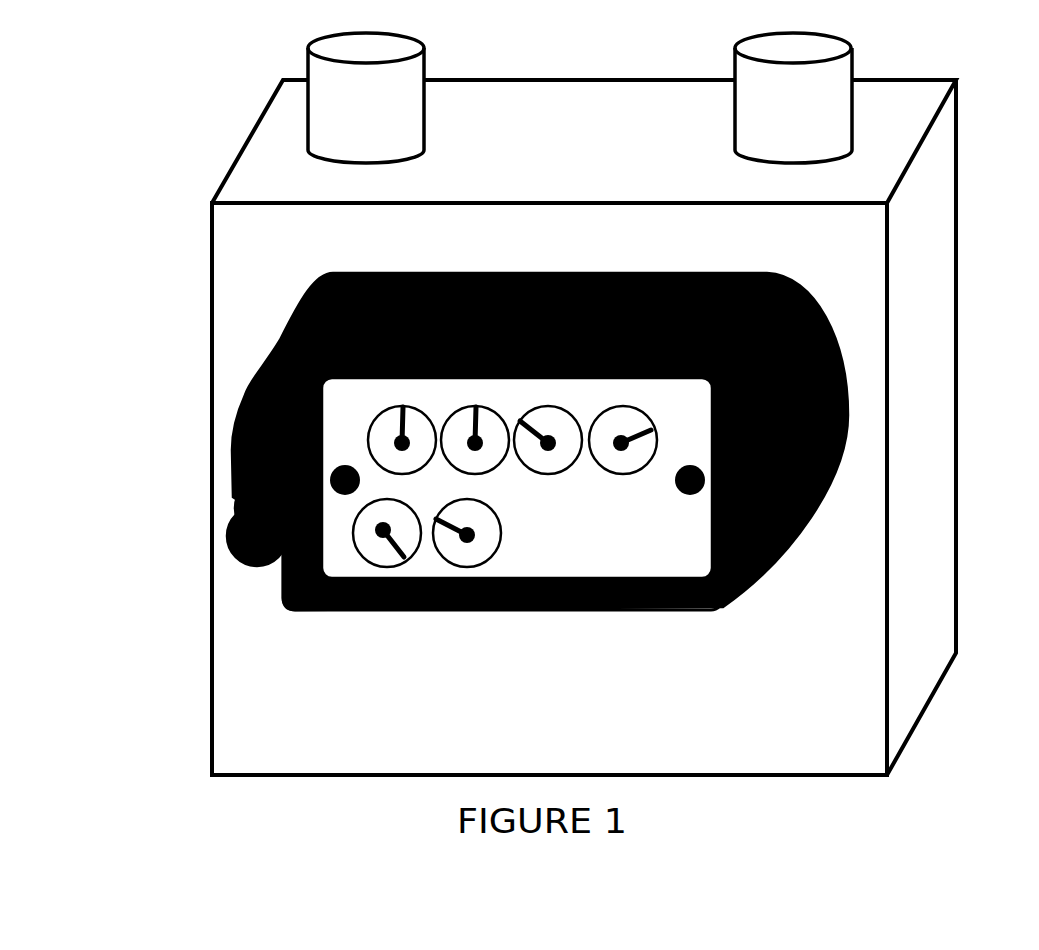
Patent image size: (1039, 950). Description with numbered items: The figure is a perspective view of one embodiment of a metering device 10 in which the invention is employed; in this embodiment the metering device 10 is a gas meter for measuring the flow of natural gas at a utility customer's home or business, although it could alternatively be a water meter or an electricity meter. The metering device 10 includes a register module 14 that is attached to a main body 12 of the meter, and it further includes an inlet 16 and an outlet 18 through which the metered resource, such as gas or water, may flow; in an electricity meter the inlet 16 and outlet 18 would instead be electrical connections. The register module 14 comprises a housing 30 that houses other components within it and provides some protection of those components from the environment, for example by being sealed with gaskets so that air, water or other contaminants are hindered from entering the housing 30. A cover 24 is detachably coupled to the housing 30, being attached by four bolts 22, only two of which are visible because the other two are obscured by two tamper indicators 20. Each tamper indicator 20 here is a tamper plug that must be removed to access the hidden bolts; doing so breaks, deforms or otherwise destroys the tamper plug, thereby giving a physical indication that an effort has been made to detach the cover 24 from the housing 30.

The metering device 10 is at (188, 109).
The main body 12 is at (960, 395).
The register module 14 is at (620, 625).
The inlet 16 is at (427, 68).
The outlet 18 is at (852, 68).
The tamper indicator 20 is at (773, 400).
The bolt 22 is at (242, 413).
The cover 24 is at (308, 358).
The housing 30 is at (353, 300).